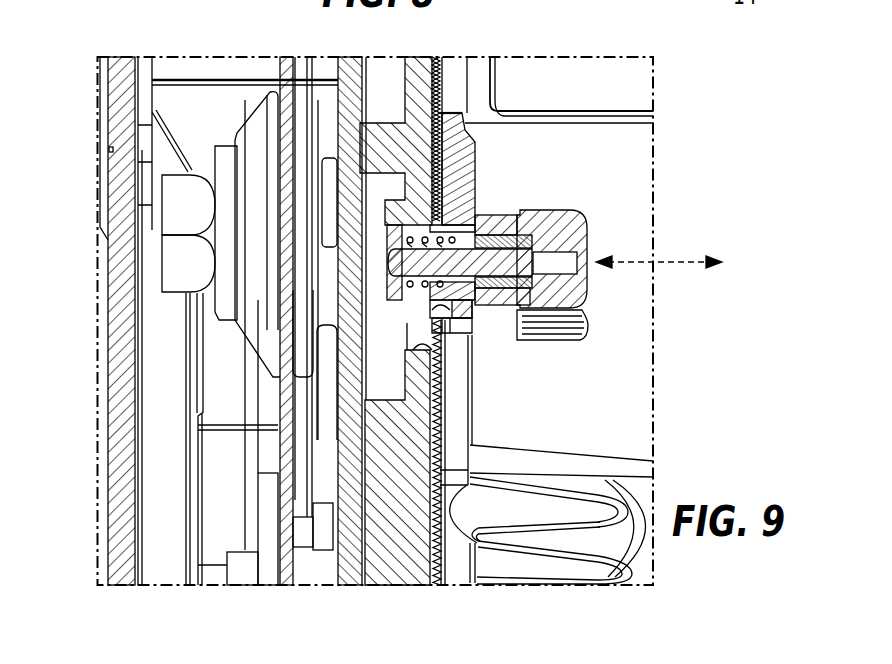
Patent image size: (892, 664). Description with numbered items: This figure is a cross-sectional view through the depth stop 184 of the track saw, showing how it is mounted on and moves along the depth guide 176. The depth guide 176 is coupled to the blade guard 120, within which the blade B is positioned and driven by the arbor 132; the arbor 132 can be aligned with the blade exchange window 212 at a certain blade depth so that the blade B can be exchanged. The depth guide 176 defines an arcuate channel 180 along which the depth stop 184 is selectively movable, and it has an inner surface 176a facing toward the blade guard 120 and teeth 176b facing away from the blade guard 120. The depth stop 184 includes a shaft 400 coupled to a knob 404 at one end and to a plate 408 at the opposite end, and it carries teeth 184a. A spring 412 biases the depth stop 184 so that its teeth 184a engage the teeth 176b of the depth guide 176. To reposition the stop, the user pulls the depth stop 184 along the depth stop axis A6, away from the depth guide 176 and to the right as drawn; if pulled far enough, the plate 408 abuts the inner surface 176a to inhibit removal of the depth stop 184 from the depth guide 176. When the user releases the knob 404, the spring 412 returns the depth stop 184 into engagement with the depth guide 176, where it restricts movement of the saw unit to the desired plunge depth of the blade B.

The plate 408 is at (392, 252).
The blade B is at (337, 140).
The blade guard 120 is at (307, 70).
The depth guide 176 is at (418, 63).
The inner surface 176a is at (407, 324).
The teeth 176b is at (440, 93).
The depth stop 184 is at (490, 188).
The teeth 184a is at (428, 136).
The knob 404 is at (565, 212).
The depth stop axis A6 is at (682, 262).
The shaft 400 is at (585, 315).
The spring 412 is at (445, 332).
The channel 180 is at (443, 335).
The arbor 132 is at (192, 210).
The blade exchange window 212 is at (117, 477).